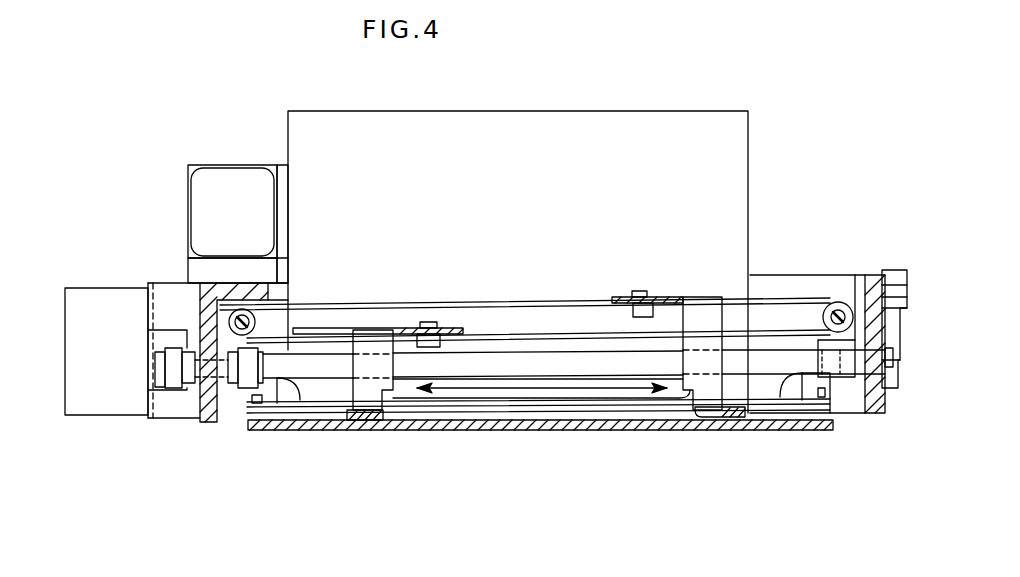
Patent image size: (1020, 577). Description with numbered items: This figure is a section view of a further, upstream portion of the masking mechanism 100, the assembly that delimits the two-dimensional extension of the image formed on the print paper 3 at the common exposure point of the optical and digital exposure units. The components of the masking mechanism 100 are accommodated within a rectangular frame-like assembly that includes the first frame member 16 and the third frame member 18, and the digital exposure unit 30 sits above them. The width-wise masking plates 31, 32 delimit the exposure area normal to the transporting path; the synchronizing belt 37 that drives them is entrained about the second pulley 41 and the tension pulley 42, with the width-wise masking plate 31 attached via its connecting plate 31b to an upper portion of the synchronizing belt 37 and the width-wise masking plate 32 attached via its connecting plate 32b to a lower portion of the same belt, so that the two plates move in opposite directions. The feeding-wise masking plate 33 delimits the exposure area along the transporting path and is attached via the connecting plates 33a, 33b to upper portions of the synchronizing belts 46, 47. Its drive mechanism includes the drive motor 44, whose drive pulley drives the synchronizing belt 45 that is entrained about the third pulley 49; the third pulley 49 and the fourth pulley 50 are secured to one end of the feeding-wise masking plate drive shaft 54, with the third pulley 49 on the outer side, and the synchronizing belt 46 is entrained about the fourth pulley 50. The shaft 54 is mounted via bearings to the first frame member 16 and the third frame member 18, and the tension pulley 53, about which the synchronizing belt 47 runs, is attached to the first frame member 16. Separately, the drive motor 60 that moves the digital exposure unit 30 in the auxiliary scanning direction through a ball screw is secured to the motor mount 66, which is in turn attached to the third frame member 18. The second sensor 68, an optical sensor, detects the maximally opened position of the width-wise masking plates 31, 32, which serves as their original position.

The masking mechanism 100 is at (210, 124).
The digital exposure unit 30 is at (737, 142).
The drive motor 60 is at (263, 207).
The motor mount 66 is at (268, 270).
The first frame member 16 is at (192, 303).
The tension pulley 42 is at (208, 300).
The drive motor 44 is at (107, 400).
The synchronizing belt 45 is at (170, 392).
The third pulley 49 is at (183, 395).
The fourth pulley 50 is at (232, 392).
The synchronizing belt 46 is at (247, 395).
The synchronizing belt 37 is at (538, 301).
The connecting plate 32b is at (424, 321).
The connecting plate 31b is at (708, 292).
The width-wise masking plate 32 is at (368, 420).
The width-wise masking plate 31 is at (717, 418).
The feeding-wise masking plate drive shaft 54 is at (556, 377).
The feeding-wise masking plate 33 is at (483, 408).
The connecting plate 33b is at (307, 411).
The connecting plate 33a is at (793, 395).
The print paper 3 is at (640, 431).
The synchronizing belt 47 is at (843, 378).
The third frame member 18 is at (873, 418).
The tension pulley 53 is at (815, 320).
The second pulley 41 is at (851, 286).
The second sensor 68 is at (895, 270).